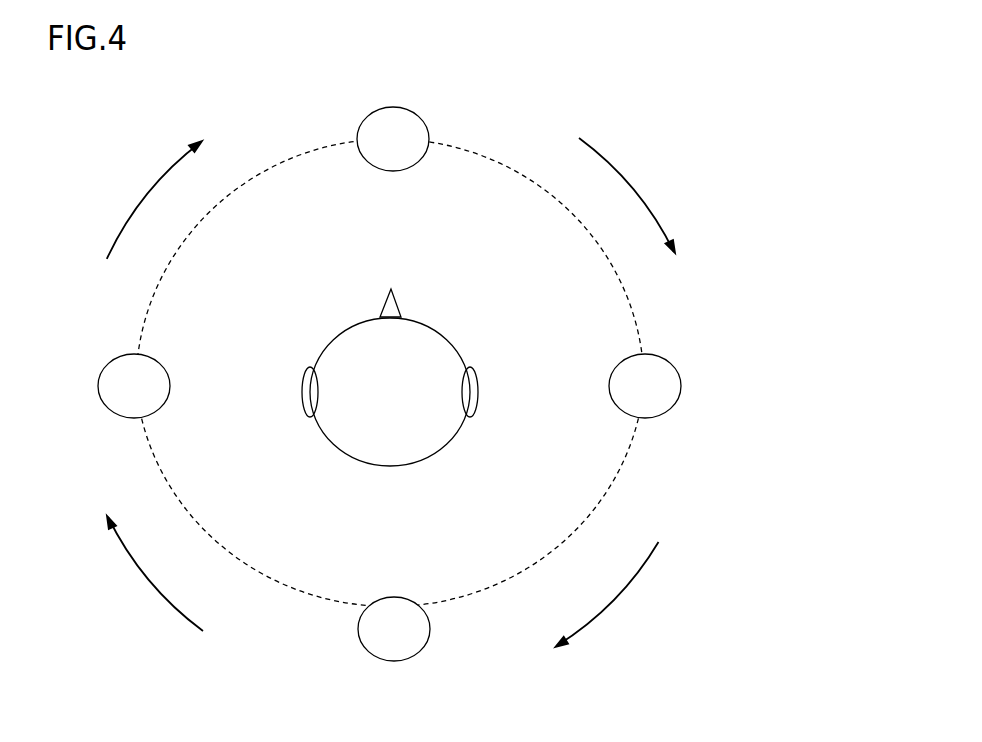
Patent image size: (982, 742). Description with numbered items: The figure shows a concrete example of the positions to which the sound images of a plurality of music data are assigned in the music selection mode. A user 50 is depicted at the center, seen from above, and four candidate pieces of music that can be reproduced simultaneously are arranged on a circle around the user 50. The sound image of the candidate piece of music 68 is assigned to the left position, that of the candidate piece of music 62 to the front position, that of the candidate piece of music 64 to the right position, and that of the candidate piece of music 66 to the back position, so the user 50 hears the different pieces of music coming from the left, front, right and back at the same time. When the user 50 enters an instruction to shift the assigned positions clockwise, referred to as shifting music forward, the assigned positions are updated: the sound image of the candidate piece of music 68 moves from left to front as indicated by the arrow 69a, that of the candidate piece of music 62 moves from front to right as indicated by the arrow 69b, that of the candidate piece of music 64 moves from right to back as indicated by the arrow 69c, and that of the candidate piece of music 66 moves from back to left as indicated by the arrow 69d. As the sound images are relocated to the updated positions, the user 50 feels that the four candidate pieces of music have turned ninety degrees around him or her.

The user 50 is at (350, 458).
The candidate piece of music 62 is at (420, 114).
The candidate piece of music 64 is at (681, 378).
The candidate piece of music 66 is at (410, 600).
The candidate piece of music 68 is at (160, 363).
The arrow 69a is at (143, 195).
The arrow 69b is at (633, 182).
The arrow 69c is at (627, 592).
The arrow 69d is at (146, 579).